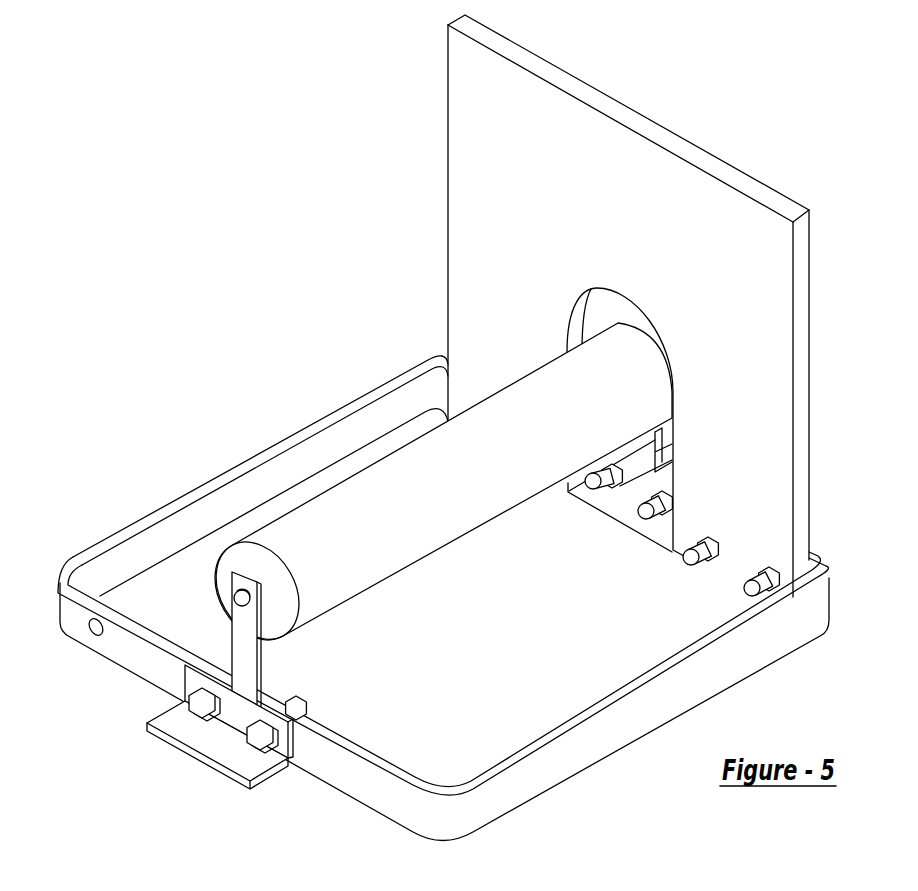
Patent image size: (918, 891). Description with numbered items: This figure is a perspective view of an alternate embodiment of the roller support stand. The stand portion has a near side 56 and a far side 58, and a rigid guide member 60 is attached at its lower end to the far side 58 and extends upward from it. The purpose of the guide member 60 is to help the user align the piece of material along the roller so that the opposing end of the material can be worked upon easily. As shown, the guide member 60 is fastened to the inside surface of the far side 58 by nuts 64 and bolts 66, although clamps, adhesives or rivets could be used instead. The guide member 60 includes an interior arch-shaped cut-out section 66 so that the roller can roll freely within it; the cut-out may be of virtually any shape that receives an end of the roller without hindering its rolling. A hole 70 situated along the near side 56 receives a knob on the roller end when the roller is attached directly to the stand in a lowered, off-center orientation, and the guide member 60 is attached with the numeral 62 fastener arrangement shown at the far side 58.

The near side 56 is at (347, 768).
The far side 58 is at (813, 557).
The guide member 60 is at (533, 221).
The nut 62 is at (773, 596).
The nut 64 is at (746, 590).
The arch-shaped cut-out section 66 is at (597, 318).
The hole 70 is at (93, 637).